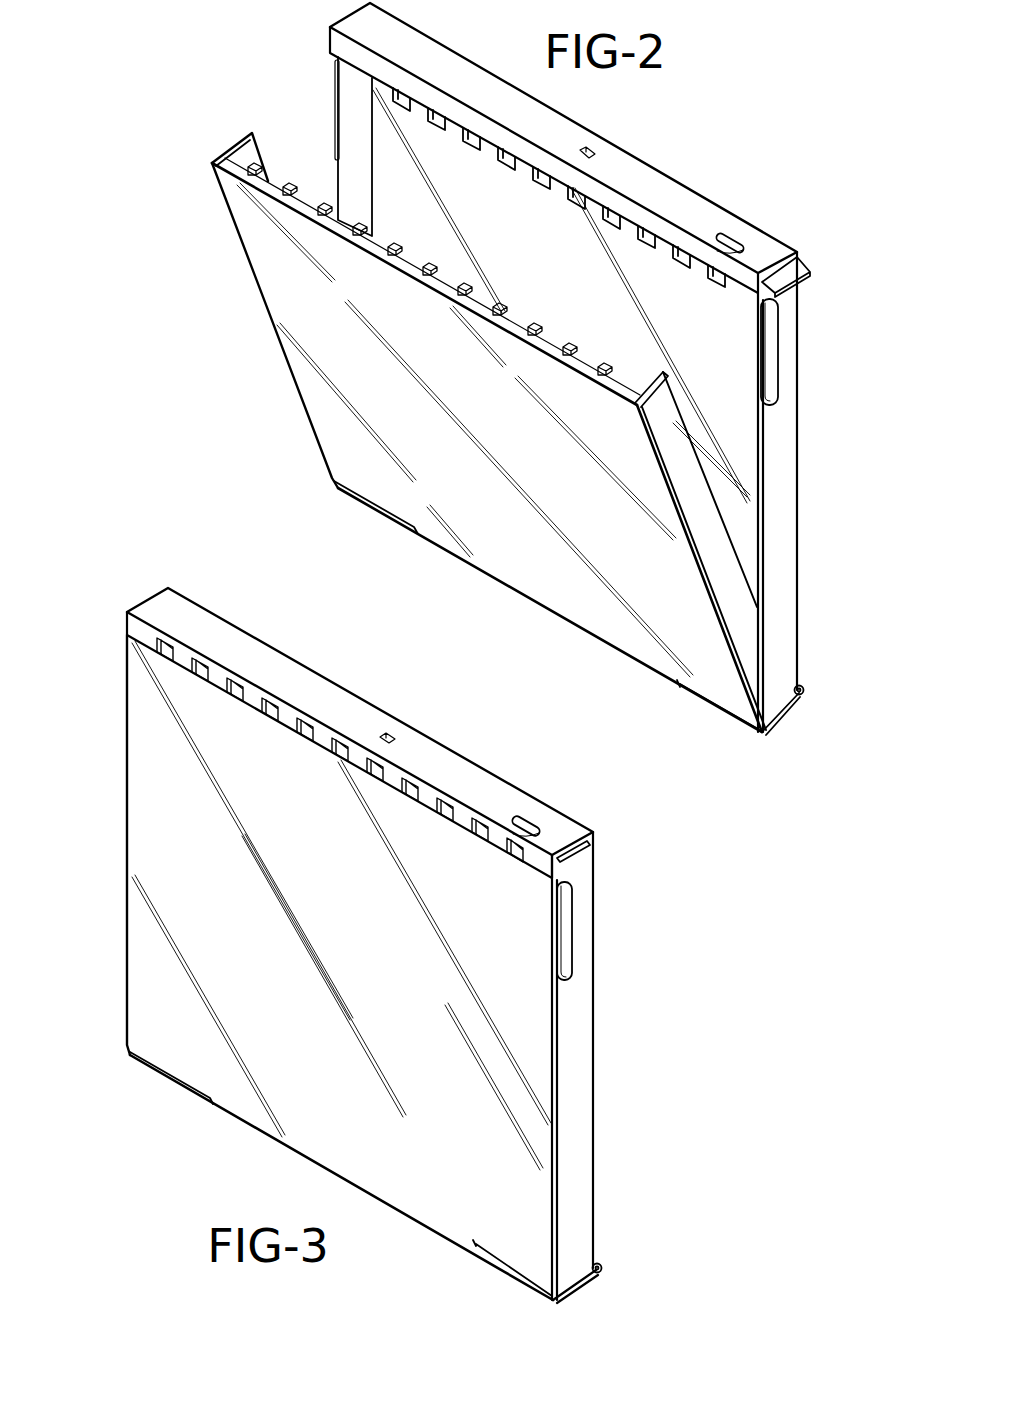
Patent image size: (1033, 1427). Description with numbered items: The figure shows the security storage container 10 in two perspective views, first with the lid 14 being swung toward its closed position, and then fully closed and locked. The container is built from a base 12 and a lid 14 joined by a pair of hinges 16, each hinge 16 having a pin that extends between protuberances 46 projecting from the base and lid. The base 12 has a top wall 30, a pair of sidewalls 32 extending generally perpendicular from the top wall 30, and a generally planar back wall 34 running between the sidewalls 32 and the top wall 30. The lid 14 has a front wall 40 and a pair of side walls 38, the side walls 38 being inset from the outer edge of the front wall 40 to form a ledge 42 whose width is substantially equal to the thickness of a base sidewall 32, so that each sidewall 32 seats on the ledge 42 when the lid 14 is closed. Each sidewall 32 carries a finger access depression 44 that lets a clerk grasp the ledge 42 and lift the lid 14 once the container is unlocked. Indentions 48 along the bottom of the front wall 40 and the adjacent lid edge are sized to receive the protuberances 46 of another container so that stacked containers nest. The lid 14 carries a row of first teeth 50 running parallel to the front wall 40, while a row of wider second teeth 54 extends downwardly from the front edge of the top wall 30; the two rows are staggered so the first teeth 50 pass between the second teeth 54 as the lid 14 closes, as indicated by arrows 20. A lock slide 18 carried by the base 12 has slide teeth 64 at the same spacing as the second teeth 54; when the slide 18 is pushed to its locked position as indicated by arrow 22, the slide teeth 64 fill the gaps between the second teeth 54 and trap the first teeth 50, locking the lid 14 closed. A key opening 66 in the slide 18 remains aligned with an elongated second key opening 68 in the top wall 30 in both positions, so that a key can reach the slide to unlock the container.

In FIG. 2, the security storage container 10 is at (648, 133).
In FIG. 3, the security storage container 10 is at (232, 1138).
In FIG. 2, the base 12 is at (800, 525).
In FIG. 3, the base 12 is at (598, 1104).
In FIG. 2, the lid 14 is at (305, 425).
In FIG. 3, the lid 14 is at (128, 786).
In FIG. 2, the hinges 16 is at (806, 702).
In FIG. 3, the hinges 16 is at (604, 1283).
In FIG. 2, the lock slide 18 is at (808, 262).
In FIG. 3, the lock slide 18 is at (605, 845).
In FIG. 2, the arrows 20 is at (200, 212).
In FIG. 3, the arrow 22 is at (590, 866).
In FIG. 2, the top wall 30 is at (668, 190).
In FIG. 3, the top wall 30 is at (468, 768).
In FIG. 2, the sidewalls 32 is at (352, 152).
In FIG. 3, the sidewalls 32 is at (587, 1010).
In FIG. 2, the back wall 34 is at (425, 135).
In FIG. 2, the side walls 38 is at (245, 135).
In FIG. 2, the front wall 40 is at (310, 345).
In FIG. 3, the front wall 40 is at (150, 855).
In FIG. 2, the ledge 42 is at (225, 150).
In FIG. 2, the finger access depression 44 is at (336, 88).
In FIG. 3, the finger access depression 44 is at (566, 952).
In FIG. 2, the protuberances 46 is at (803, 685).
In FIG. 3, the protuberances 46 is at (601, 1262).
In FIG. 2, the indentions 48 is at (390, 505).
In FIG. 3, the indentions 48 is at (172, 1080).
In FIG. 2, the first teeth 50 is at (428, 278).
In FIG. 2, the second teeth 54 is at (557, 182).
In FIG. 3, the second teeth 54 is at (322, 744).
In FIG. 3, the slide teeth 64 is at (408, 796).
In FIG. 3, the key opening 66 is at (522, 800).
In FIG. 2, the second key opening 68 is at (745, 240).
In FIG. 3, the second key opening 68 is at (540, 828).